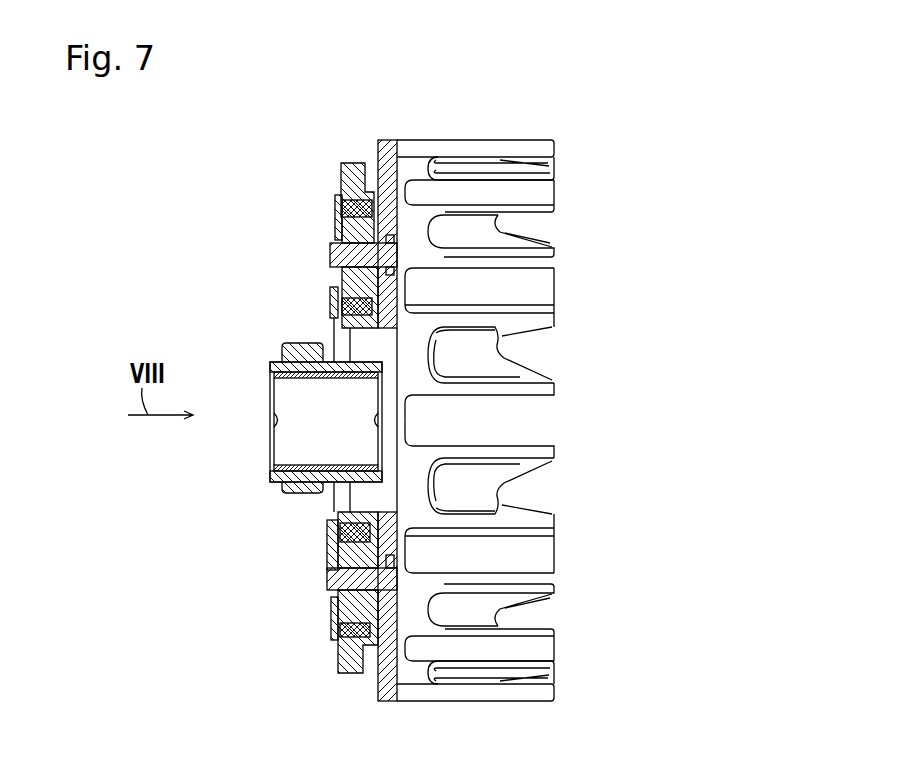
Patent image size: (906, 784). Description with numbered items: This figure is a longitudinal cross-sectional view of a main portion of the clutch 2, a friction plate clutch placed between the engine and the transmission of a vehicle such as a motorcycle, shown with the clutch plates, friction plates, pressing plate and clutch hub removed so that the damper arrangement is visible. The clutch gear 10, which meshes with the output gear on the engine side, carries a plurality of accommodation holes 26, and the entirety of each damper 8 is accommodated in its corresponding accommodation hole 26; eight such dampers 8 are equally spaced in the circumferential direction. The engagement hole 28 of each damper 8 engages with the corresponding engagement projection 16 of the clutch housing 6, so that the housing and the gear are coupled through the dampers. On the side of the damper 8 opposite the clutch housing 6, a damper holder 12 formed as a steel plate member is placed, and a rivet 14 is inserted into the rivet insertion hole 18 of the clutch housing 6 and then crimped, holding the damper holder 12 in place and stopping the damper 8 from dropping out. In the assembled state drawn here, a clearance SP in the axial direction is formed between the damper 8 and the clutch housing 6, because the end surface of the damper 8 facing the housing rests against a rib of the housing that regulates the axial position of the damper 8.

The clutch 2 is at (500, 125).
The clutch housing 6 is at (395, 140).
The damper 8 is at (338, 200).
The clutch gear 10 is at (351, 188).
The damper holder 12 is at (335, 222).
The rivet 14 is at (340, 257).
The engagement projection 16 is at (343, 607).
The rivet insertion hole 18 is at (334, 577).
The accommodation hole 26 is at (386, 547).
The engagement hole 28 is at (337, 552).
The clearance SP is at (398, 311).